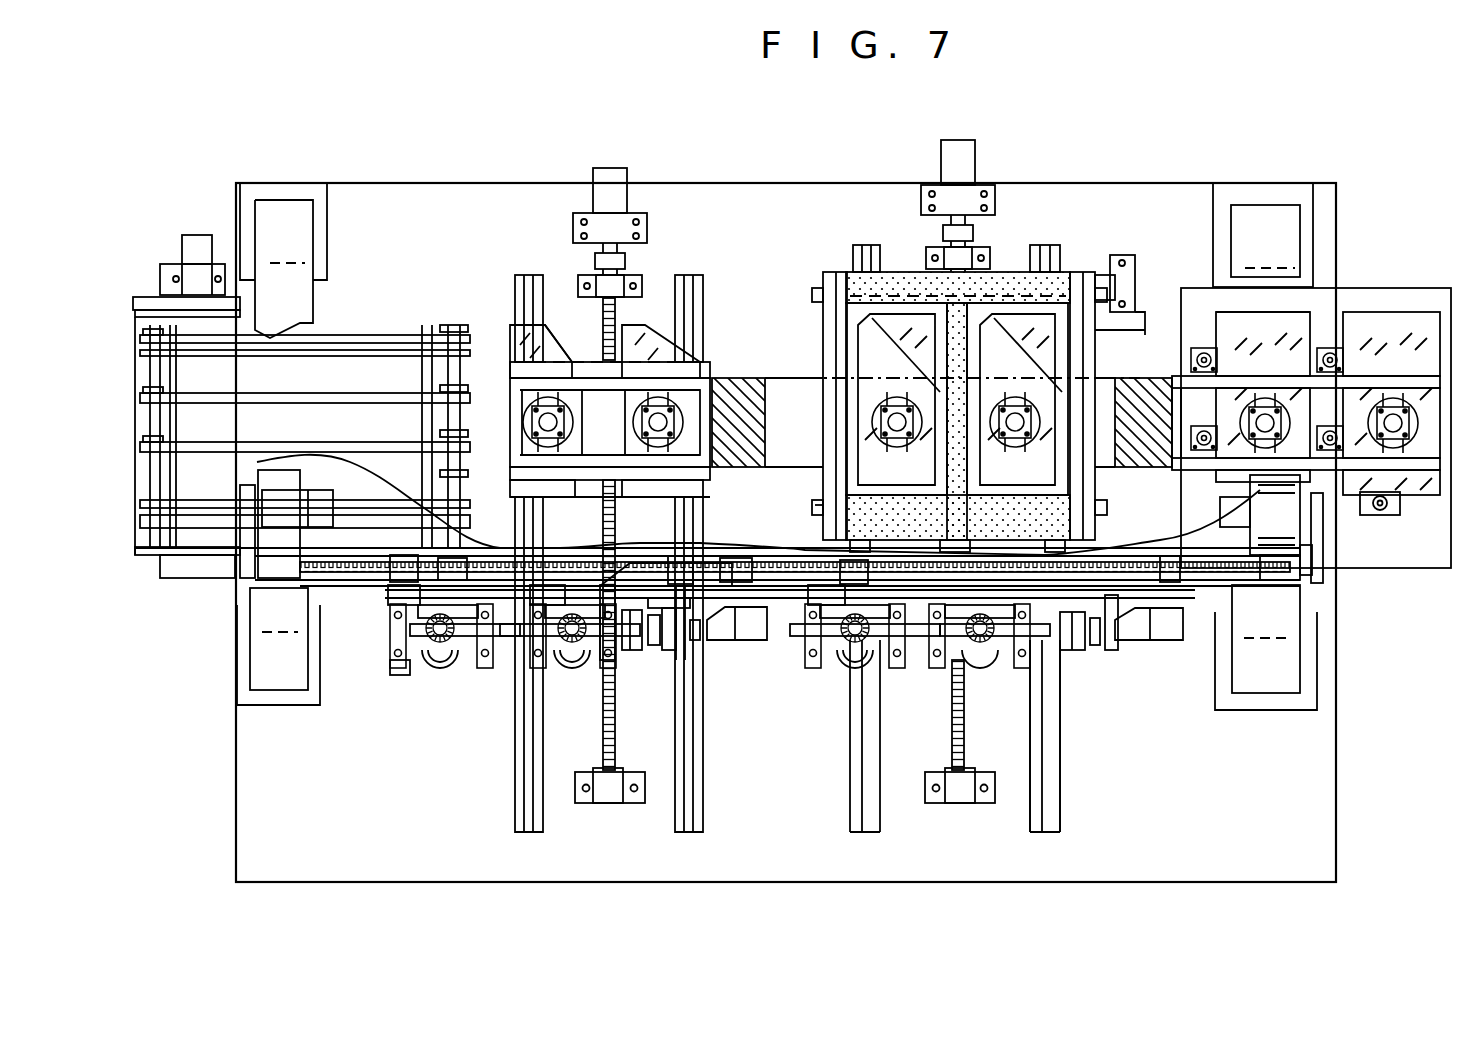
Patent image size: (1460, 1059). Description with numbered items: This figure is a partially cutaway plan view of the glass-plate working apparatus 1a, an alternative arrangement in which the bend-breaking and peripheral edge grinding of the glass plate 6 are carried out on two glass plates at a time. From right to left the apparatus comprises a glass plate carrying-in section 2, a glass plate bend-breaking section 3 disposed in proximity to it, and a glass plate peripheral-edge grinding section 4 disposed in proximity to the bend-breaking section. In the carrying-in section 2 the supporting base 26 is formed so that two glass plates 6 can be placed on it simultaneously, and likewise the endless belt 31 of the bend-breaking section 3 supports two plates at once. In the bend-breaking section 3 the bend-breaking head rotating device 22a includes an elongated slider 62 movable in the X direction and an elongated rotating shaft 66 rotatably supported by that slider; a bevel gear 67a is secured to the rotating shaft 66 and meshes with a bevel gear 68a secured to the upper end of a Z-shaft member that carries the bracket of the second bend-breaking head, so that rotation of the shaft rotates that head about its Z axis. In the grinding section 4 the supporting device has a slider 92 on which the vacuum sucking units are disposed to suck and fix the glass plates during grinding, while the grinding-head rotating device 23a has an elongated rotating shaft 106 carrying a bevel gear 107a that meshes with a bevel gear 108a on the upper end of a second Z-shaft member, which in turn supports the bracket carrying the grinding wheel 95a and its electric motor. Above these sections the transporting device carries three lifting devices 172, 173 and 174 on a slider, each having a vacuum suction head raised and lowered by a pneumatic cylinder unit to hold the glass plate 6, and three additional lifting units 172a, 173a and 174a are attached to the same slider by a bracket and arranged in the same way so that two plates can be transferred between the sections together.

The glass-plate working apparatus 1a is at (1226, 176).
The glass plate carrying-in section 2 is at (1390, 582).
The glass plate bend-breaking section 3 is at (1078, 695).
The glass plate peripheral-edge grinding section 4 is at (445, 722).
The glass plate 6 is at (540, 345).
The bend-breaking head rotating device 22a is at (1113, 654).
The grinding-head rotating device 23a is at (708, 656).
The supporting base 26 is at (1280, 456).
The endless belt 31 is at (820, 504).
The slider 62 is at (1150, 574).
The rotating shaft 66 is at (918, 652).
The bevel gear 67a is at (812, 648).
The bevel gear 68a is at (835, 658).
The slider 92 is at (700, 372).
The grinding wheel 95a is at (425, 664).
The rotating shaft 106 is at (505, 648).
The bevel gear 107a is at (408, 630).
The bevel gear 108a is at (445, 662).
The lifting device 172 is at (1426, 482).
The lifting unit 172a is at (1235, 432).
The lifting device 173 is at (967, 346).
The lifting unit 173a is at (880, 426).
The lifting device 174 is at (663, 500).
The lifting unit 174a is at (560, 448).